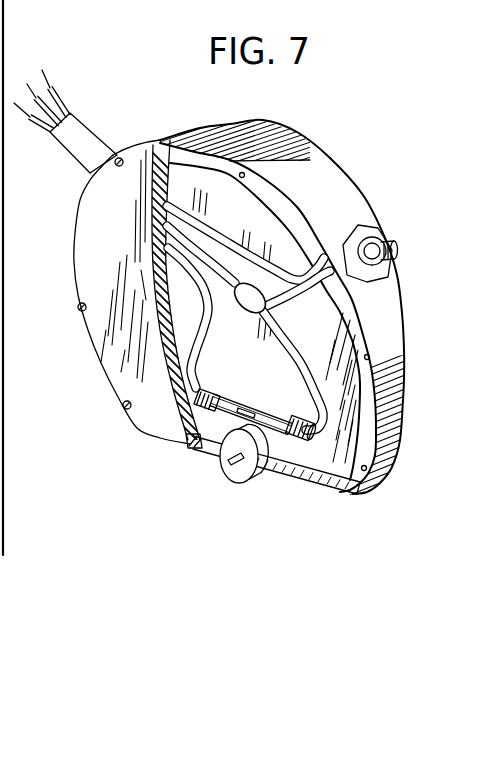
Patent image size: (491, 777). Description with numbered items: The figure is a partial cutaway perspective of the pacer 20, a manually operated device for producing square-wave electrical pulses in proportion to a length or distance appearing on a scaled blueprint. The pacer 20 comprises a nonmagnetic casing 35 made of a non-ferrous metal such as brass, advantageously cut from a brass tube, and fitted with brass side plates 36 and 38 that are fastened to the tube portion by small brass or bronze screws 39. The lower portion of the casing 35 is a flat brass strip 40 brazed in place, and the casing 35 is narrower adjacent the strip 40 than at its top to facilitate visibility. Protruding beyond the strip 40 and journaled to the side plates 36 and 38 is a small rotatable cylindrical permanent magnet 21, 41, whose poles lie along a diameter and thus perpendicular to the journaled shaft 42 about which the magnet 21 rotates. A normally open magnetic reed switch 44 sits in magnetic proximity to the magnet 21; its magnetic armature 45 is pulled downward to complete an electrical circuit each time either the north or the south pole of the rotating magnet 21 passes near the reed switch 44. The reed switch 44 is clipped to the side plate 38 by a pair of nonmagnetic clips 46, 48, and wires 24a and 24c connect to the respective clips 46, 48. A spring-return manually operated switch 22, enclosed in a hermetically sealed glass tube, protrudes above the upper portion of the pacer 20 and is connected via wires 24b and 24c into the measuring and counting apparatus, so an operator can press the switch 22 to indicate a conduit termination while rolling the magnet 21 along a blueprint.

The pacer 20 is at (418, 316).
The permanent magnet 21 is at (212, 479).
The manually operated switch 22 is at (392, 244).
The wire 24a is at (266, 365).
The wire 24b is at (294, 246).
The wire 24c is at (254, 213).
The nonmagnetic casing 35 is at (404, 429).
The side plate 36 is at (80, 262).
The side plate 38 is at (357, 388).
The screws 39 is at (122, 156).
The flat brass strip 40 is at (321, 482).
The magnet body 41 is at (212, 479).
The journaled shaft 42 is at (226, 468).
The magnetic reed switch 44 is at (187, 443).
The magnetic armature 45 is at (250, 408).
The nonmagnetic clip 46 is at (211, 392).
The nonmagnetic clip 48 is at (297, 439).